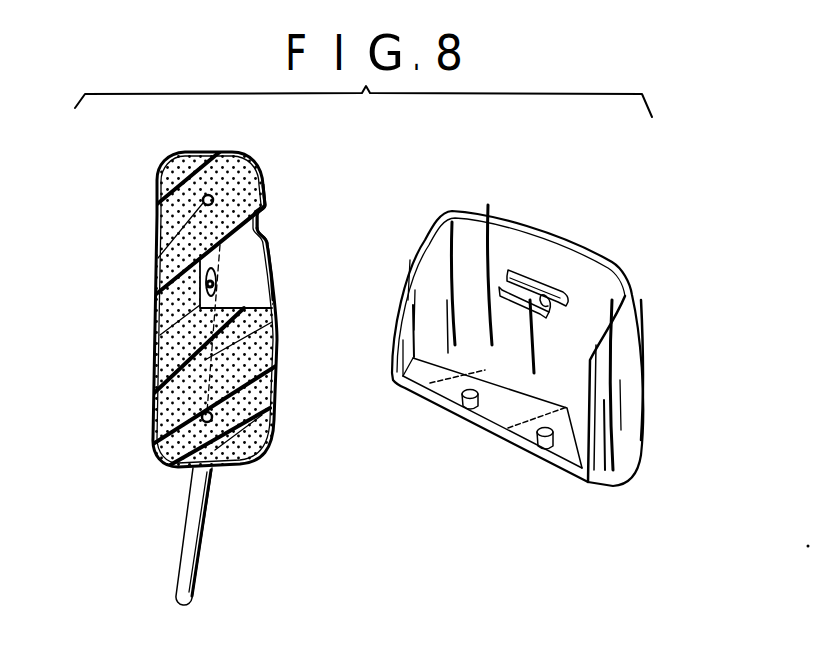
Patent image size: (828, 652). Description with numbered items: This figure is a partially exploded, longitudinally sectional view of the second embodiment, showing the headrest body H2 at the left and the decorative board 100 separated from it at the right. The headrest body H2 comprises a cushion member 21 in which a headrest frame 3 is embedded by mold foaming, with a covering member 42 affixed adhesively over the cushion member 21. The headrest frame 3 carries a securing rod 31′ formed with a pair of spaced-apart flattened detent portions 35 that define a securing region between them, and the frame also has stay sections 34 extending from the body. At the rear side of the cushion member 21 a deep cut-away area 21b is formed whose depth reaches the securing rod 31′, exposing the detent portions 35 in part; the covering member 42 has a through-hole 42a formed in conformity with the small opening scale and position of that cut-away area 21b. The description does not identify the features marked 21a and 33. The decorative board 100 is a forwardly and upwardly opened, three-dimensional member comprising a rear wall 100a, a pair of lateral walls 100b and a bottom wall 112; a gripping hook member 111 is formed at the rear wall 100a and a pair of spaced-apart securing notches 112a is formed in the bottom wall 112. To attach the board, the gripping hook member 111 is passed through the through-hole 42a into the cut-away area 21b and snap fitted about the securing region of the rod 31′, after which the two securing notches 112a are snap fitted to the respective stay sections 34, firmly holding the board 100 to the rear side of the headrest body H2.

The headrest body H2 is at (155, 173).
The headrest frame 3 is at (220, 203).
The cushion member 21 is at (170, 258).
The notch portion of pad 21a is at (266, 230).
The cut-away area 21b is at (258, 296).
The covering member 42 is at (160, 330).
The through-hole 42a is at (267, 246).
The detent portions 35 is at (216, 268).
The securing rod 31′ is at (216, 284).
The lower hole 33 is at (200, 417).
The stay sections 34 is at (187, 528).
The decorative board 100 is at (617, 263).
The rear wall 100a is at (476, 240).
The lateral walls 100b is at (428, 257).
The gripping hook member 111 is at (537, 282).
The bottom wall 112 is at (508, 407).
The securing notches 112a is at (475, 410).